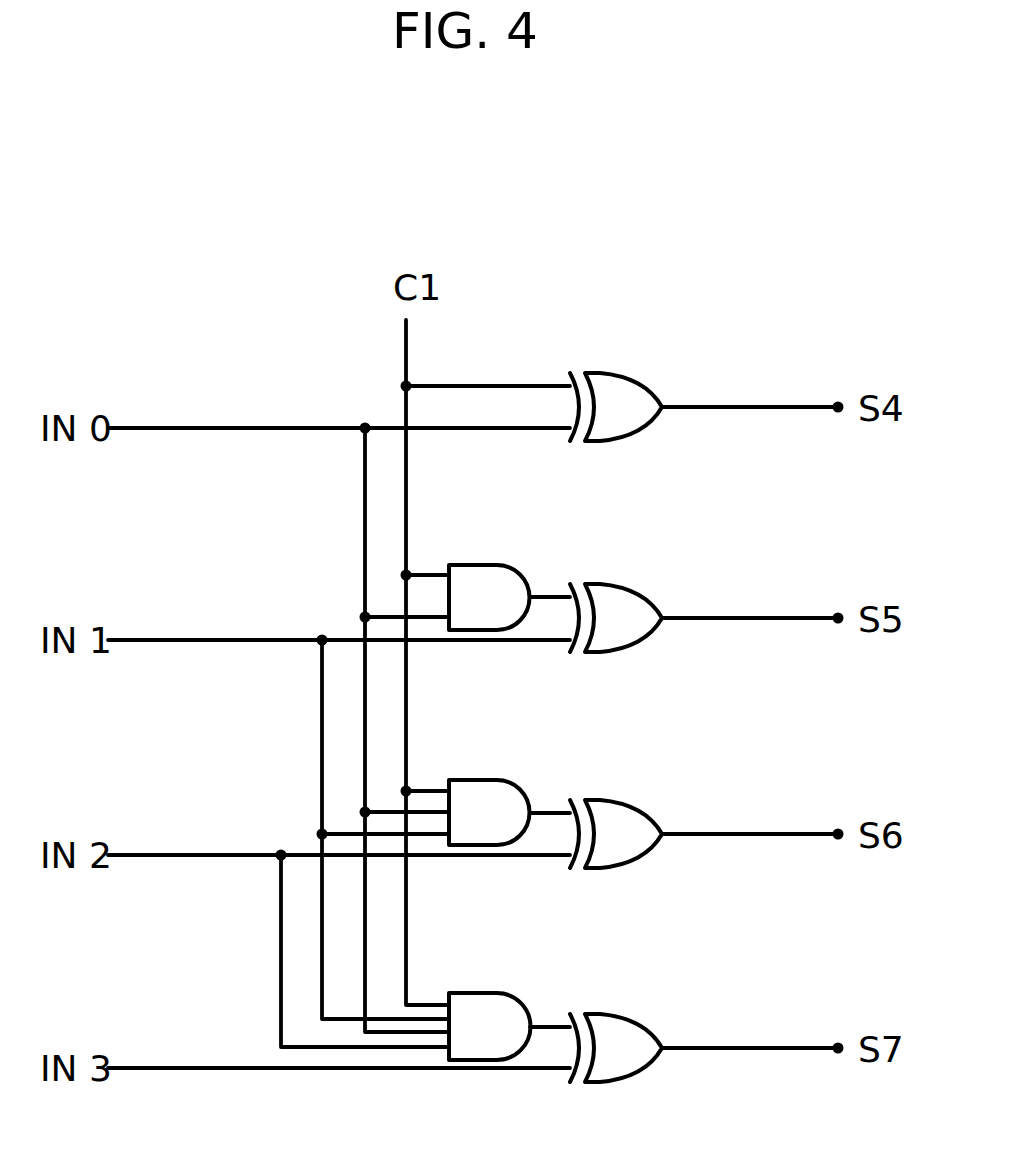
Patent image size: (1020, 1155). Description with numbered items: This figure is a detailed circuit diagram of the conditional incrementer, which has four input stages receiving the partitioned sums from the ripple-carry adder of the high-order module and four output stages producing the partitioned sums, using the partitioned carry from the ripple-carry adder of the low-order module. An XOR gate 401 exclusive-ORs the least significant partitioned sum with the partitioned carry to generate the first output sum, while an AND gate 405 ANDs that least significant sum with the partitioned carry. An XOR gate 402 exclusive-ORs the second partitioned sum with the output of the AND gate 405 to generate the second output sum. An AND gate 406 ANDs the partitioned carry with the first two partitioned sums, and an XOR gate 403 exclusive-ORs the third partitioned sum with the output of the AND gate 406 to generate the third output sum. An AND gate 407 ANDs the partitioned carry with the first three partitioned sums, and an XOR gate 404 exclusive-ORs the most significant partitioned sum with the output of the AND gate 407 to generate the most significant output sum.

The XOR gate 401 is at (646, 393).
The XOR gate 402 is at (646, 604).
The XOR gate 403 is at (646, 820).
The XOR gate 404 is at (646, 1034).
The AND gate 405 is at (530, 580).
The AND gate 406 is at (530, 795).
The AND gate 407 is at (530, 1008).